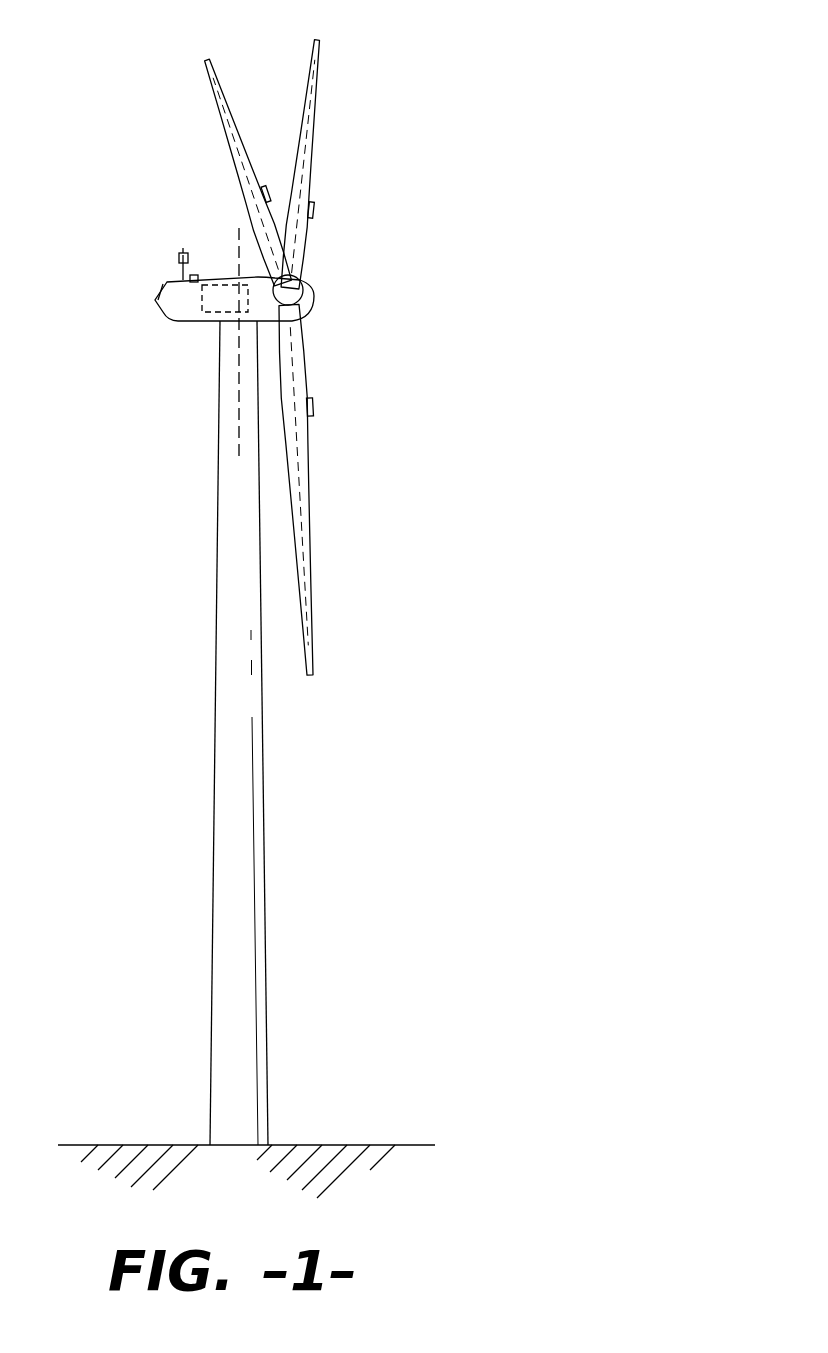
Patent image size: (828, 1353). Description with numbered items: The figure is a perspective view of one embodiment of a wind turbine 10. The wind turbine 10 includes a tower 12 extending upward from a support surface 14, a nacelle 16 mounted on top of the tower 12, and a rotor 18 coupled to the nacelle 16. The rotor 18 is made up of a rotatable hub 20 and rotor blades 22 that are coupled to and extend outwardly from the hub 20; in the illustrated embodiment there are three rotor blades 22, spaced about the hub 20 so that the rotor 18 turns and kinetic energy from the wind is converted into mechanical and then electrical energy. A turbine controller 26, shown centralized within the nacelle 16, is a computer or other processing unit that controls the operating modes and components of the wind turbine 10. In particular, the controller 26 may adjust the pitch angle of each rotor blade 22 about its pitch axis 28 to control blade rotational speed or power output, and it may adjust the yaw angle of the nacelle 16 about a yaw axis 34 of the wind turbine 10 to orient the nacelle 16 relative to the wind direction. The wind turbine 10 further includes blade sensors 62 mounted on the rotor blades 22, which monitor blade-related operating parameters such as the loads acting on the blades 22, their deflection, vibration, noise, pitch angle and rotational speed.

The wind turbine 10 is at (413, 118).
The tower 12 is at (226, 847).
The support surface 14 is at (140, 1145).
The nacelle 16 is at (197, 325).
The rotor 18 is at (301, 344).
The rotatable hub 20 is at (312, 299).
The rotor blade 22 is at (308, 82).
The turbine controller 26 is at (227, 273).
The pitch axis 28 is at (240, 183).
The yaw axis 34 is at (242, 405).
The blade sensors 62 is at (266, 190).